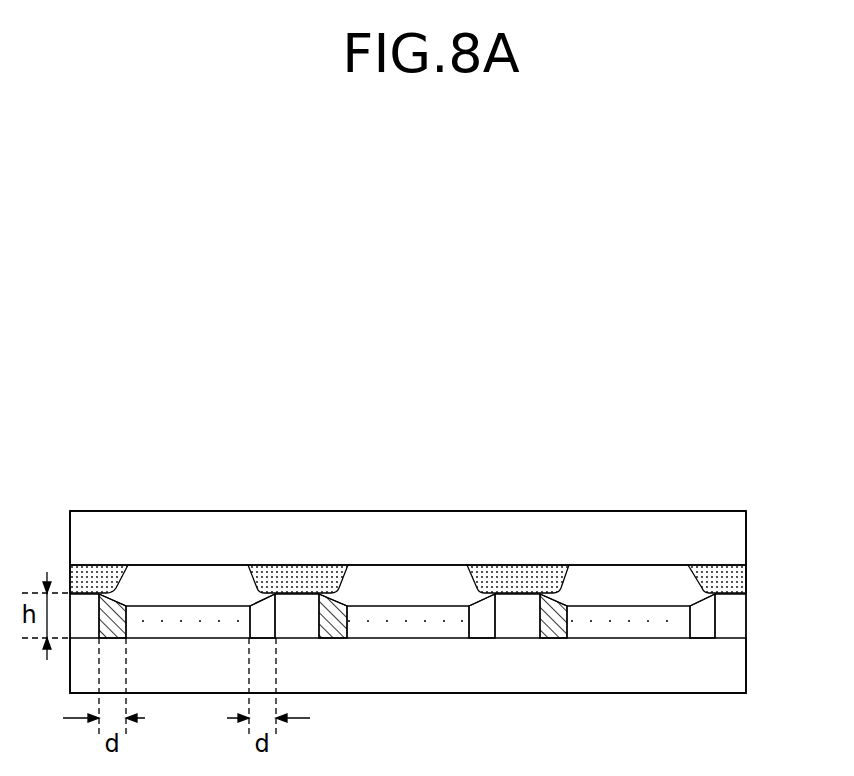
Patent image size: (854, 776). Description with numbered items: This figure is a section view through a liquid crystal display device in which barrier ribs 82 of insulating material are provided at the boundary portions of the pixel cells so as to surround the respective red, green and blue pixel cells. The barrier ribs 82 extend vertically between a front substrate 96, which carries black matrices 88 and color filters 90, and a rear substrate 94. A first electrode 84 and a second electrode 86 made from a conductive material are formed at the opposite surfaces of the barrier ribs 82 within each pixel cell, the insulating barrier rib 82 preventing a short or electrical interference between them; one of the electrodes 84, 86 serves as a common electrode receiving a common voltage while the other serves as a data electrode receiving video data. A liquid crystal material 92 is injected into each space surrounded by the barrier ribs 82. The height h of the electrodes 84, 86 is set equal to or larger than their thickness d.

The barrier ribs 82 is at (746, 627).
The first electrode 84 is at (99, 638).
The second electrode 86 is at (258, 623).
The black matrices 88 is at (532, 567).
The color filters 90 is at (389, 575).
The liquid crystal material 92 is at (682, 622).
The rear substrate 94 is at (746, 665).
The front substrate 96 is at (746, 540).